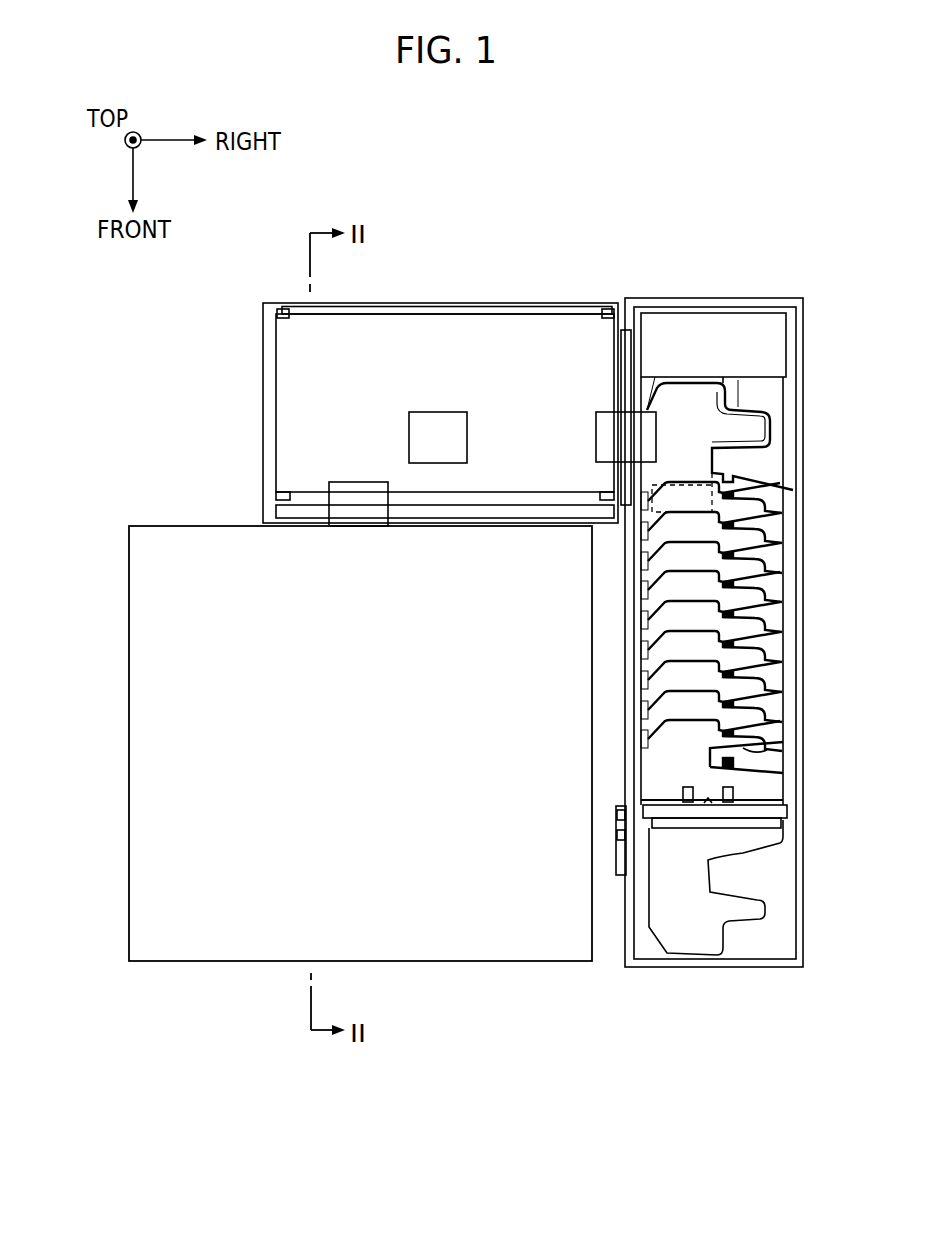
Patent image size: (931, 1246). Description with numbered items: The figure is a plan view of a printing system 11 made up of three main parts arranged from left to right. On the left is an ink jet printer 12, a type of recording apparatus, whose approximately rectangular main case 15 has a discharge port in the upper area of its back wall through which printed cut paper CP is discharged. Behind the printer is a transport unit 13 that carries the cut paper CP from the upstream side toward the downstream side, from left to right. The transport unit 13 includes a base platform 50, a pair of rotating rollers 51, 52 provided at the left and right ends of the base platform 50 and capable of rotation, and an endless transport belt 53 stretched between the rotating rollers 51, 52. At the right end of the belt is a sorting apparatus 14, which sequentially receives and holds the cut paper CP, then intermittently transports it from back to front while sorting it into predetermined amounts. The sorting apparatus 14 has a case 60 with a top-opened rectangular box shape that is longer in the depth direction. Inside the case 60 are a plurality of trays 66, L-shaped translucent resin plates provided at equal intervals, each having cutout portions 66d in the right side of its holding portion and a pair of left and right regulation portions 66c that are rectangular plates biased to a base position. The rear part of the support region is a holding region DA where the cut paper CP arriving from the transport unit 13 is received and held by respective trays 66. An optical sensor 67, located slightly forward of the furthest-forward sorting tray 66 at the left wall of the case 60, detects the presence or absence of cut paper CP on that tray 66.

The printing system 11 is at (176, 348).
The ink jet printer 12 is at (100, 733).
The transport unit 13 is at (510, 260).
The sorting apparatus 14 is at (818, 612).
The main case 15 is at (153, 537).
The base platform 50 is at (262, 398).
The rotating roller 51 is at (281, 308).
The rotating roller 52 is at (612, 308).
The endless transport belt 53 is at (393, 325).
The case 60 is at (803, 383).
The tray 66 is at (790, 502).
The regulation portion 66c is at (726, 787).
The cutout portion 66d is at (780, 744).
The optical sensor 67 is at (616, 837).
The cut paper CP is at (437, 412).
The holding region DA is at (734, 360).